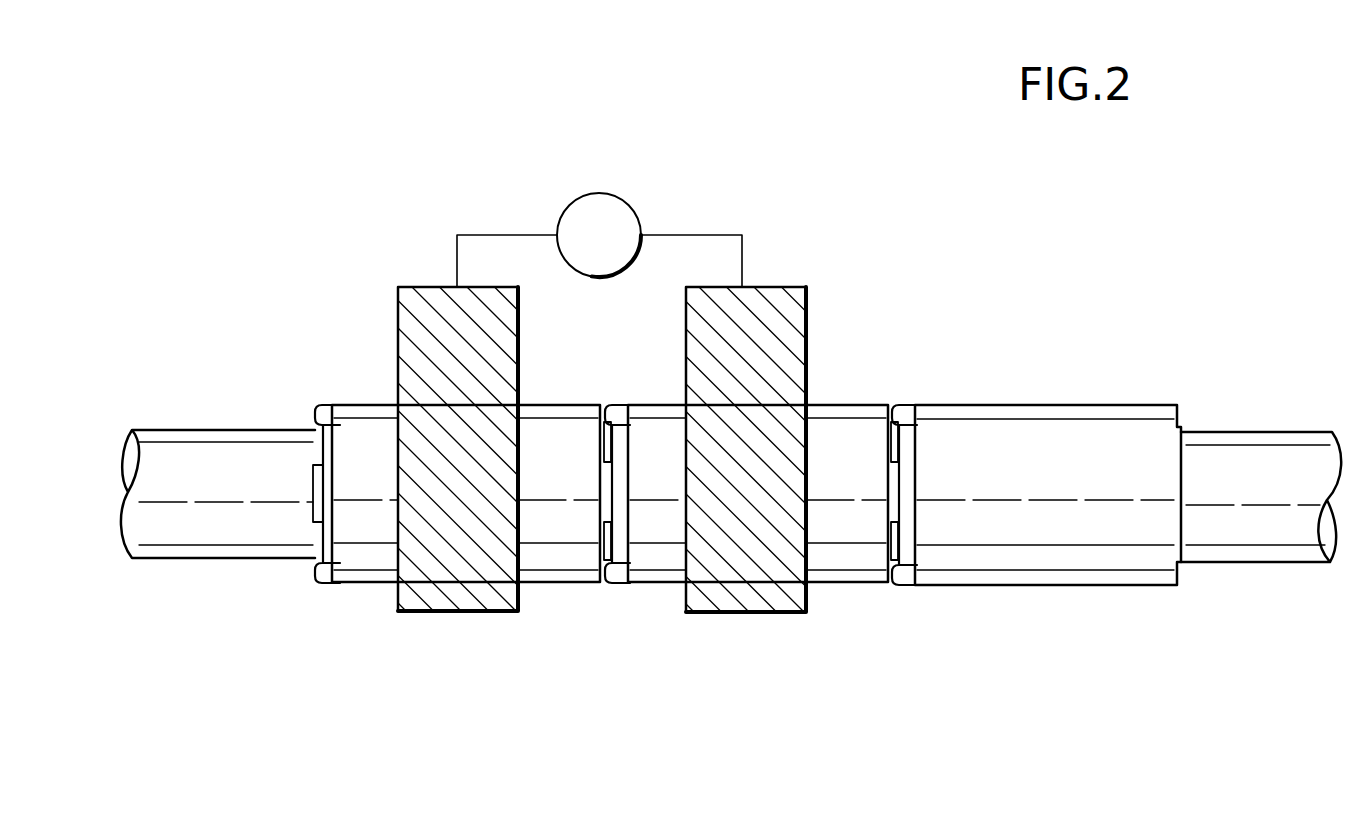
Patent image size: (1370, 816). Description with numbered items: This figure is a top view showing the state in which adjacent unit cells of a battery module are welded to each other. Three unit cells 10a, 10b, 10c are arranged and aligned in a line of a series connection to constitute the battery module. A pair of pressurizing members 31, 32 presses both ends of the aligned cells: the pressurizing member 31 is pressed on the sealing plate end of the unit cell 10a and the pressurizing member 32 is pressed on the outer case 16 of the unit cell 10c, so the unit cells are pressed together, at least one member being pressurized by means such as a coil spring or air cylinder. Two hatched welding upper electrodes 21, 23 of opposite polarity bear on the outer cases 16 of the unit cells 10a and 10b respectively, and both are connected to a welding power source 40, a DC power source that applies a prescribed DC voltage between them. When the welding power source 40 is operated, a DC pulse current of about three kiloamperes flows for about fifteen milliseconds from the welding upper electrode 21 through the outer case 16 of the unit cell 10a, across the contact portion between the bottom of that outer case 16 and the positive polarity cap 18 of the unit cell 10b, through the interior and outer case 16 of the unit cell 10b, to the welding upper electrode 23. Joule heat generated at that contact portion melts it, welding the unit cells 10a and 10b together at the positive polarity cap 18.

The unit cell 10a is at (365, 598).
The unit cell 10b is at (653, 598).
The unit cell 10c is at (1020, 598).
The outer case 16 is at (566, 413).
The positive polarity cap 18 is at (312, 506).
The welding upper electrode 21 is at (455, 598).
The welding upper electrode 23 is at (739, 598).
The pressurizing member 31 is at (225, 436).
The pressurizing member 32 is at (1250, 440).
The welding power source 40 is at (602, 192).